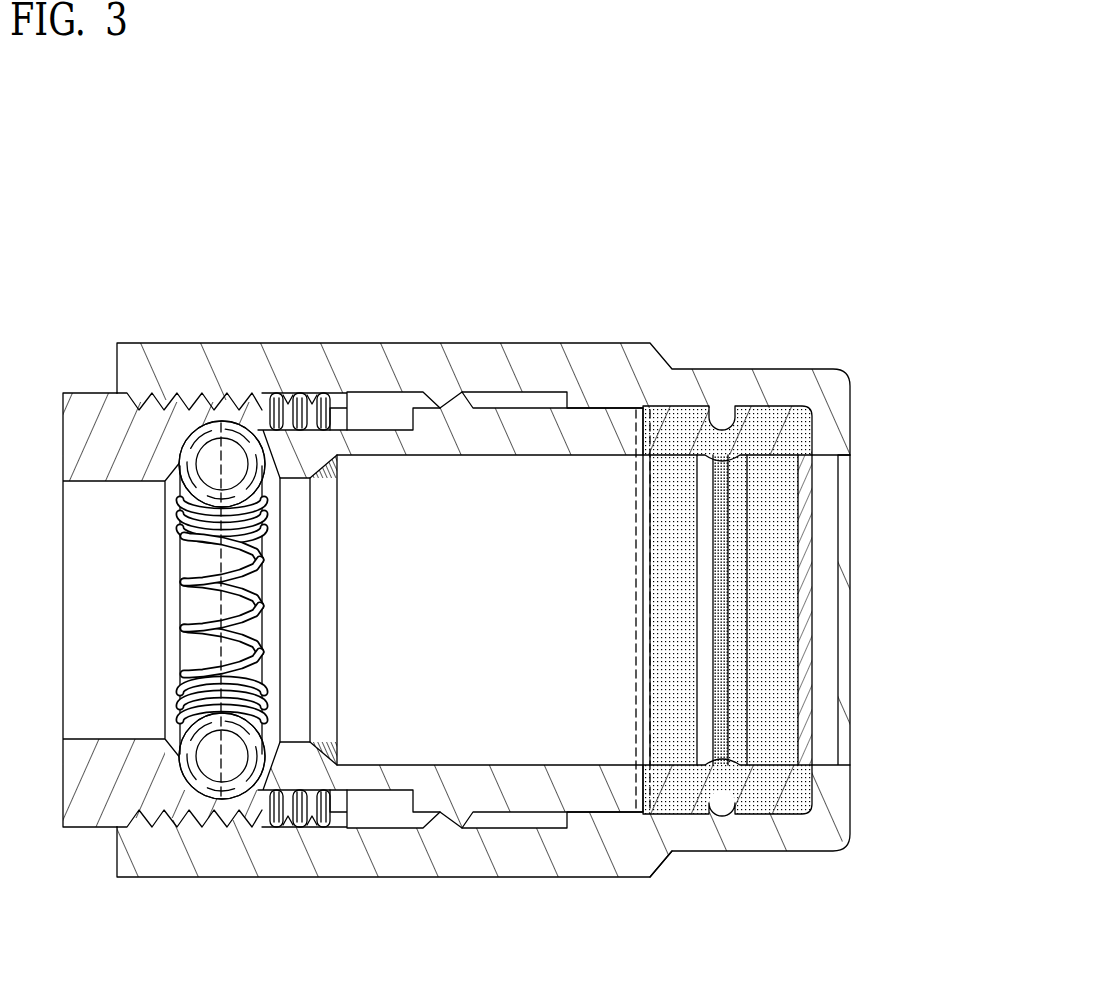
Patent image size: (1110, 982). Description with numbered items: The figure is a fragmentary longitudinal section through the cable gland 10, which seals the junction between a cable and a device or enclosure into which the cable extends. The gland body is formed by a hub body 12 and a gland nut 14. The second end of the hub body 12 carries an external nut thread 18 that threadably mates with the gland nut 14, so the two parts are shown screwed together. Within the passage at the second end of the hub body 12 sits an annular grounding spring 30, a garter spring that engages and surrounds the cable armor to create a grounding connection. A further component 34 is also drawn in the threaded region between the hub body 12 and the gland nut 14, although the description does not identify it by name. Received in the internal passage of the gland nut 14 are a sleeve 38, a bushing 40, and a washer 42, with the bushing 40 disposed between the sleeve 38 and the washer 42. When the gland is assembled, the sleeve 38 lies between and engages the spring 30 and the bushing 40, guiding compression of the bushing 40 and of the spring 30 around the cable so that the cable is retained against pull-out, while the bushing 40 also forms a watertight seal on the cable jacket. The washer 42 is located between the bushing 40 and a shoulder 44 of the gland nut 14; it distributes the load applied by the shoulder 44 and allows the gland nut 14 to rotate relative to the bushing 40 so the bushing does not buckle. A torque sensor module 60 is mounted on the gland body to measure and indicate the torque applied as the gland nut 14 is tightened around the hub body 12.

The cable gland 10 is at (572, 254).
The hub body 12 is at (50, 822).
The gland nut 14 is at (590, 338).
The external nut thread 18 is at (165, 878).
The annular grounding spring 30 is at (215, 422).
The seal ring 34 is at (318, 832).
The sleeve 38 is at (522, 798).
The bushing 40 is at (672, 828).
The washer 42 is at (803, 778).
The shoulder 44 is at (845, 457).
The torque sensor module 60 is at (165, 480).